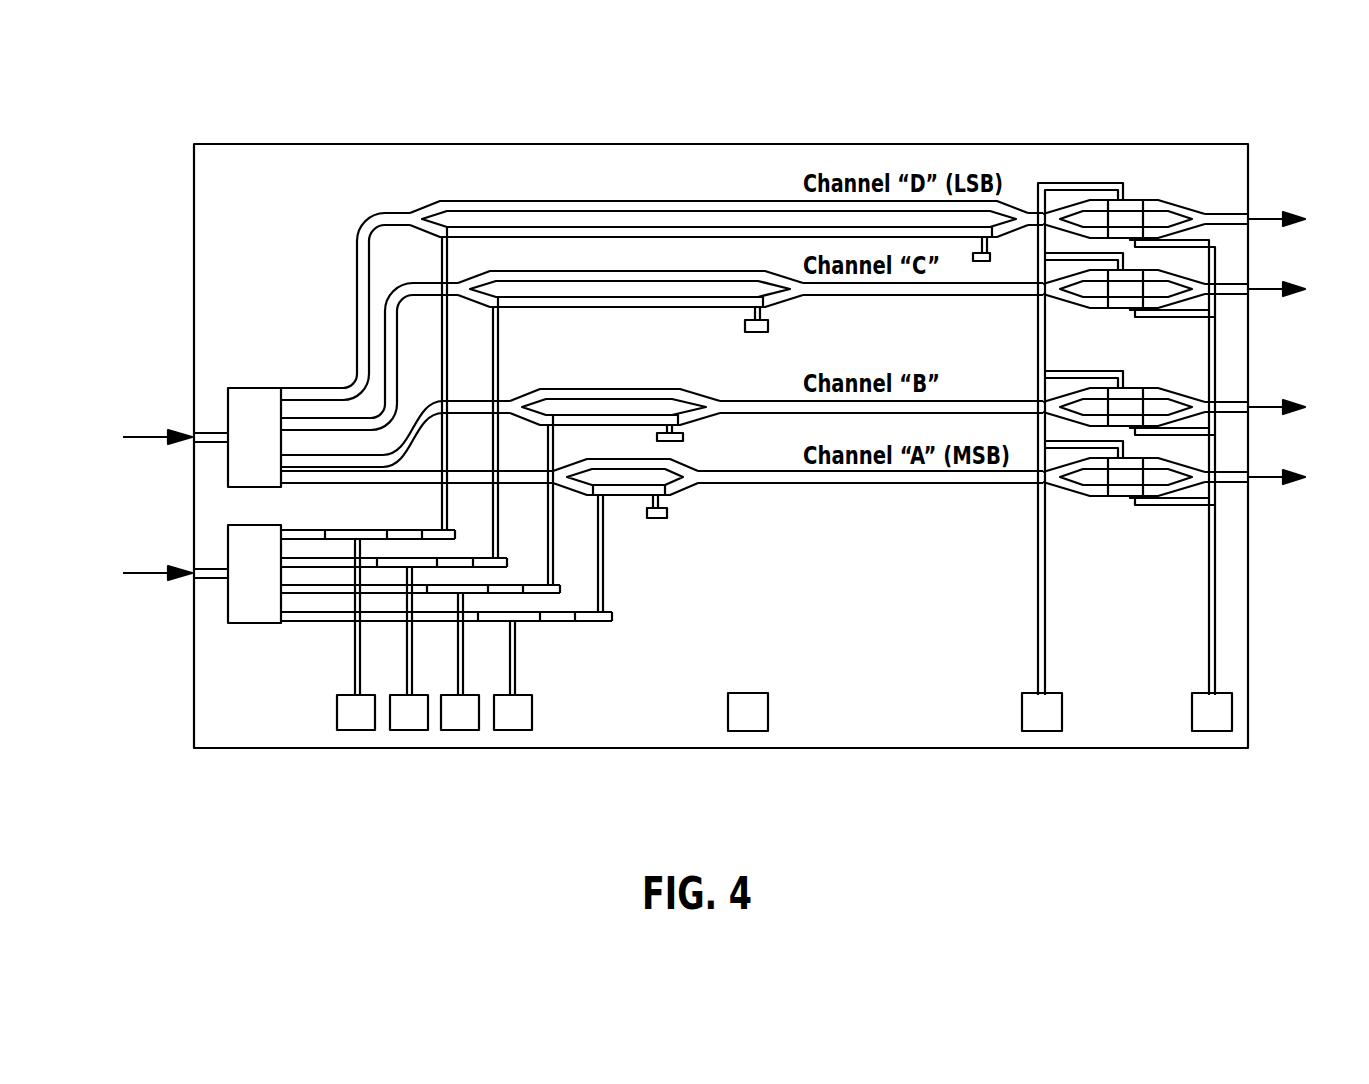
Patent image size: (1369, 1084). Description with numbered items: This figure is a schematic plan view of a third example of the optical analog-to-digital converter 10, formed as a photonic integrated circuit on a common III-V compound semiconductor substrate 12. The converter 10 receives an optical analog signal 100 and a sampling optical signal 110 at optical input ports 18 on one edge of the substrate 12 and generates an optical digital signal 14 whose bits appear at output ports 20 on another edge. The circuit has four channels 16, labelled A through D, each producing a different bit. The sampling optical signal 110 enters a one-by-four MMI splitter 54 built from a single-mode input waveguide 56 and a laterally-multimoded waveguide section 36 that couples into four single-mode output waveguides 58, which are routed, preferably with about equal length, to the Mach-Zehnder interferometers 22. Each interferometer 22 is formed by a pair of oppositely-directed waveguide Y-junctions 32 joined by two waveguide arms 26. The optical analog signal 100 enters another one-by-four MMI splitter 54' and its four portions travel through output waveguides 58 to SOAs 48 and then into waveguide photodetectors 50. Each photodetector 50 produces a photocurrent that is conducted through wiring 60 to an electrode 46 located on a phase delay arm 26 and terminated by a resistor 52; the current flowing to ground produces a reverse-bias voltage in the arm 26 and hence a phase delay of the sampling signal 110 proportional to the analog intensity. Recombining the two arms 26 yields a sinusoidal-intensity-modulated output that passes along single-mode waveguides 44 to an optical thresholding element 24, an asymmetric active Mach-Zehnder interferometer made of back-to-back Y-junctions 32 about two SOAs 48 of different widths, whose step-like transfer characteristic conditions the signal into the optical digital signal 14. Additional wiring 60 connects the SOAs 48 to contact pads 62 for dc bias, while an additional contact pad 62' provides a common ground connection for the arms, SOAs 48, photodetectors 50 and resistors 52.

The optical analog-to-digital converter 10 is at (1118, 786).
The semiconductor substrate 12 is at (250, 195).
The optical digital signal 14 is at (1278, 490).
The channel 16 is at (840, 498).
The optical input port 18 is at (190, 446).
The output port 20 is at (1253, 228).
The optical waveguide interferometer 22 is at (720, 362).
The optical thresholding element 24 is at (1047, 535).
The phase delay arm 26 is at (550, 410).
The waveguide Y-junction 32 is at (515, 402).
The laterally-multimoded waveguide section 36 is at (243, 449).
The single-mode waveguide 44 is at (753, 482).
The electrode 46 is at (635, 492).
The semiconductor optical amplifier 48 is at (495, 622).
The waveguide photodetector 50 is at (595, 622).
The resistor 52 is at (658, 520).
The 1×4 MMI splitter 54 is at (195, 380).
The 1×4 MMI splitter 54' is at (195, 628).
The single-mode input waveguide 56 is at (217, 430).
The single-mode output waveguide 58 is at (383, 357).
The wiring 60 is at (492, 517).
The contact pad 62 is at (784, 712).
The contact pad 62' is at (748, 712).
The optical analog signal 100 is at (148, 581).
The sampling optical signal 110 is at (150, 432).